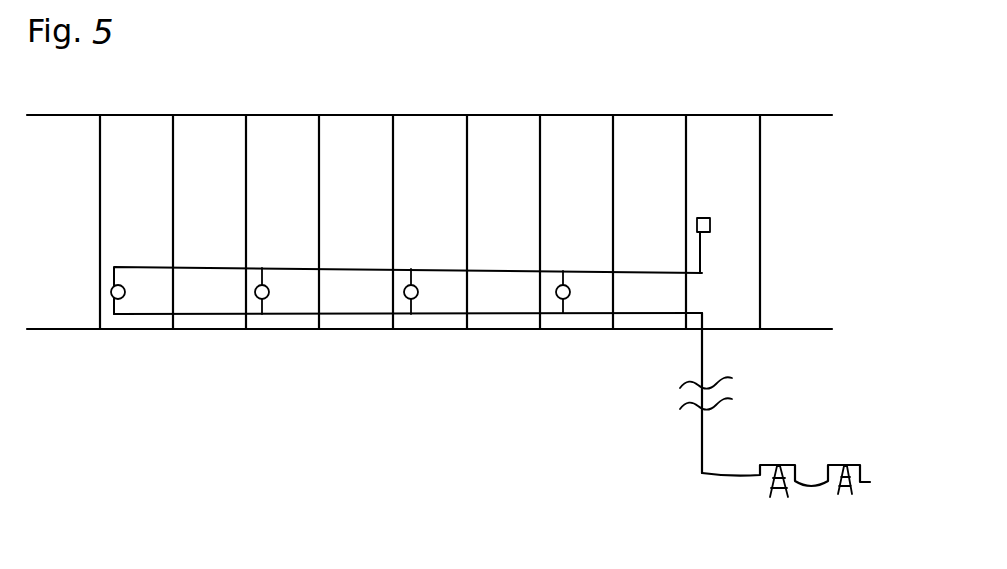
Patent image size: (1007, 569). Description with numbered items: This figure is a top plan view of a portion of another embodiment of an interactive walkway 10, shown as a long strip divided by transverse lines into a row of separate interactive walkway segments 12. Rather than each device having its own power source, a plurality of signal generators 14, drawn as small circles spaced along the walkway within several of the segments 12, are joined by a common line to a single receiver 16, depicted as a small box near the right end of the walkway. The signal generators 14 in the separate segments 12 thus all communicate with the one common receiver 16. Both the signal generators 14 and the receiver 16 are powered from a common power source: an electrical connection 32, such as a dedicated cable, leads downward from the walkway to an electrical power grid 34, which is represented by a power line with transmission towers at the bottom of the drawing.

The interactive walkway 10 is at (369, 352).
The interactive walkway segments 12 is at (130, 128).
The signal generators 14 is at (110, 297).
The receiver 16 is at (711, 224).
The electrical connection 32 is at (697, 352).
The electrical power grid 34 is at (740, 477).